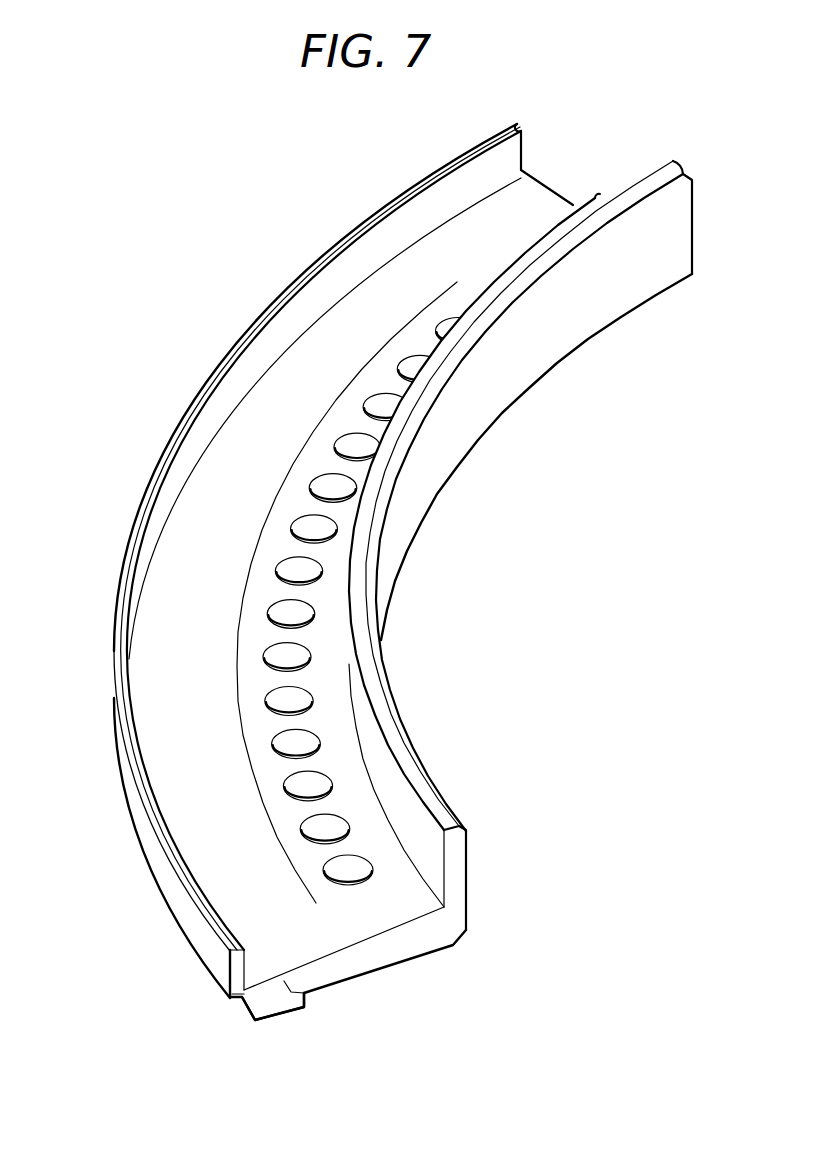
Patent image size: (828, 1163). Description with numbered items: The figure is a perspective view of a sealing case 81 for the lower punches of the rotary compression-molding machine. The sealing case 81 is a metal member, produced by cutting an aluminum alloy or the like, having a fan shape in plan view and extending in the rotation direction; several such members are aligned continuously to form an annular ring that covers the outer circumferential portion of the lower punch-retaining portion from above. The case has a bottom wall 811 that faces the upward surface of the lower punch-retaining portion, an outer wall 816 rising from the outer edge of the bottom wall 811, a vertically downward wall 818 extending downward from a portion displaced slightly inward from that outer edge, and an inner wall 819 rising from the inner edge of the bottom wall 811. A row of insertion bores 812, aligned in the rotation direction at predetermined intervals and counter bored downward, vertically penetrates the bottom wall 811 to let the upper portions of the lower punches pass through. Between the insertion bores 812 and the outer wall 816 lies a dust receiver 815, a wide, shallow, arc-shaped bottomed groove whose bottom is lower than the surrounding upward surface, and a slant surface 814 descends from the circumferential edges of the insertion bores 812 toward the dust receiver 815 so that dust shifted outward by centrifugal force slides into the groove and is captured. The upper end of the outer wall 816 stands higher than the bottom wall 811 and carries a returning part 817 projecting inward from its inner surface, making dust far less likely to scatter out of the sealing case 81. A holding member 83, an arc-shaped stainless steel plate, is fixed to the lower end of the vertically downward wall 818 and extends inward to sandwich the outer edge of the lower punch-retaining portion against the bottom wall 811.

The sealing case 81 is at (140, 493).
The bottom wall 811 is at (345, 492).
The insertion bores 812 is at (263, 660).
The slant surface 814 is at (332, 955).
The dust receiver 815 is at (205, 553).
The outer wall 816 is at (230, 973).
The returning part 817 is at (240, 948).
The vertically downward wall 818 is at (240, 999).
The inner wall 819 is at (472, 879).
The holding member 83 is at (284, 1014).